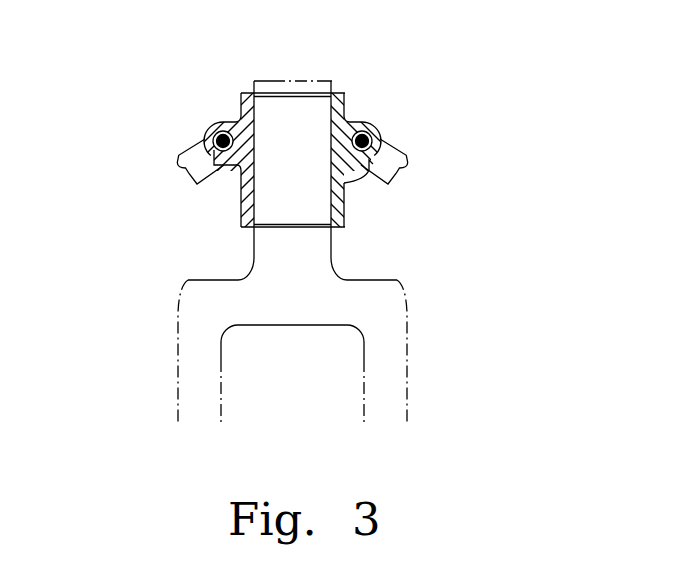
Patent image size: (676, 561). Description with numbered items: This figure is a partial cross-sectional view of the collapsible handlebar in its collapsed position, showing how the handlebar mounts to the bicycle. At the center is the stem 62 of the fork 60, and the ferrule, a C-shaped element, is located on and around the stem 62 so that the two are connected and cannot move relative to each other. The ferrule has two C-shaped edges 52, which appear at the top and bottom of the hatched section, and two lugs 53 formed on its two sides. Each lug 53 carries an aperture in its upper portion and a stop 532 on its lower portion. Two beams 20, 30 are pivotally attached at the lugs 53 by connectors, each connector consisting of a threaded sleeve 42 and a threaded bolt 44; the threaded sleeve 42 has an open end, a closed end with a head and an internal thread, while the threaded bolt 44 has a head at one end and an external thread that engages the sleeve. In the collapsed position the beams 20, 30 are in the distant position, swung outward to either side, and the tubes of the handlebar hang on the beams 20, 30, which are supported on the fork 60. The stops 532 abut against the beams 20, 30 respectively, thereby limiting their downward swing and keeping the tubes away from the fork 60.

The beam 20 is at (402, 158).
The beam 30 is at (192, 158).
The threaded sleeve 42 is at (221, 131).
The threaded bolt 44 is at (222, 164).
The C-shaped edge 52 is at (246, 224).
The lug 53 is at (362, 124).
The stop 532 is at (370, 168).
The fork 60 is at (290, 335).
The stem 62 is at (320, 83).